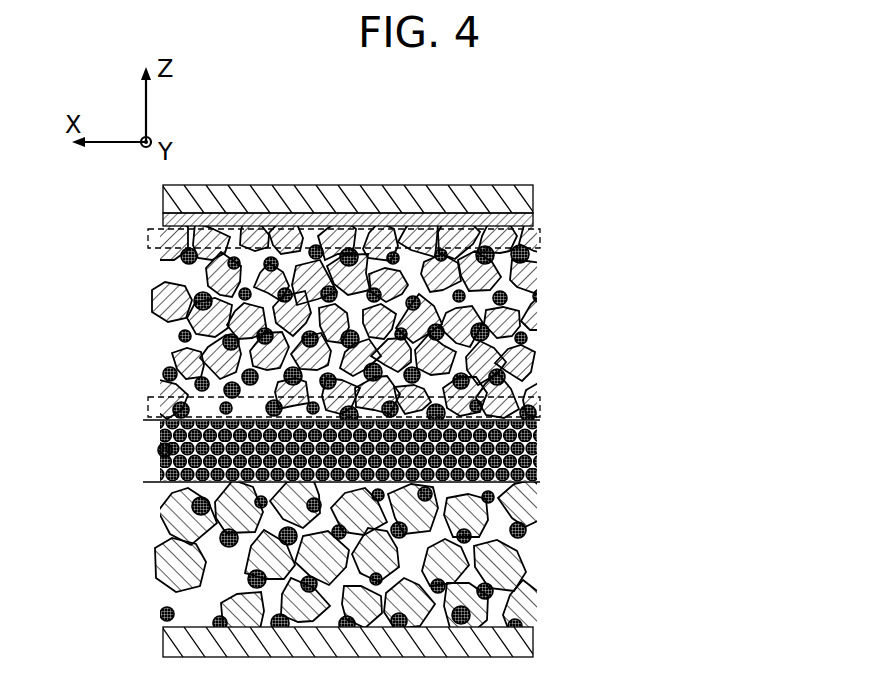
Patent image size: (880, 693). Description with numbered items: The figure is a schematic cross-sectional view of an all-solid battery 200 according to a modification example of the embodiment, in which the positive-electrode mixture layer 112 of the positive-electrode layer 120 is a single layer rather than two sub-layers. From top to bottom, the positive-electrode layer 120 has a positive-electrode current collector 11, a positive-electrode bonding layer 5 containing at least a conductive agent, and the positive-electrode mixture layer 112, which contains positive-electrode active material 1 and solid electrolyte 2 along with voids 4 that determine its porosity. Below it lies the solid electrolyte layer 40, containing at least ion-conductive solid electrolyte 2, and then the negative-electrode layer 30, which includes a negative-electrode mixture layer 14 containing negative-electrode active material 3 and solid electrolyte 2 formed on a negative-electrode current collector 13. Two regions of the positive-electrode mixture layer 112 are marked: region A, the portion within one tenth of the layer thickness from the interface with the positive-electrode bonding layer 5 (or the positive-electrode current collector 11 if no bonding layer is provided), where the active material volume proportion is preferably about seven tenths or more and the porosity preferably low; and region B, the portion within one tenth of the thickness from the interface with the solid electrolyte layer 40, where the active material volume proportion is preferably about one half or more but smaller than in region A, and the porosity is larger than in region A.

The all-solid battery 200 is at (497, 160).
The positive-electrode layer 120 is at (703, 142).
The positive-electrode current collector 11 is at (533, 200).
The positive-electrode bonding layer 5 is at (533, 218).
The positive-electrode mixture layer 112 is at (548, 226).
The positive-electrode active material 1 is at (170, 302).
The voids 4 is at (232, 390).
The region close to positive-electrode current collector A is at (150, 242).
The region close to solid electrolyte layer B is at (150, 398).
The solid electrolyte layer 40 is at (548, 422).
The solid electrolyte 2 is at (165, 450).
The negative-electrode layer 30 is at (703, 480).
The negative-electrode mixture layer 14 is at (548, 482).
The negative-electrode active material 3 is at (178, 565).
The negative-electrode current collector 13 is at (533, 640).